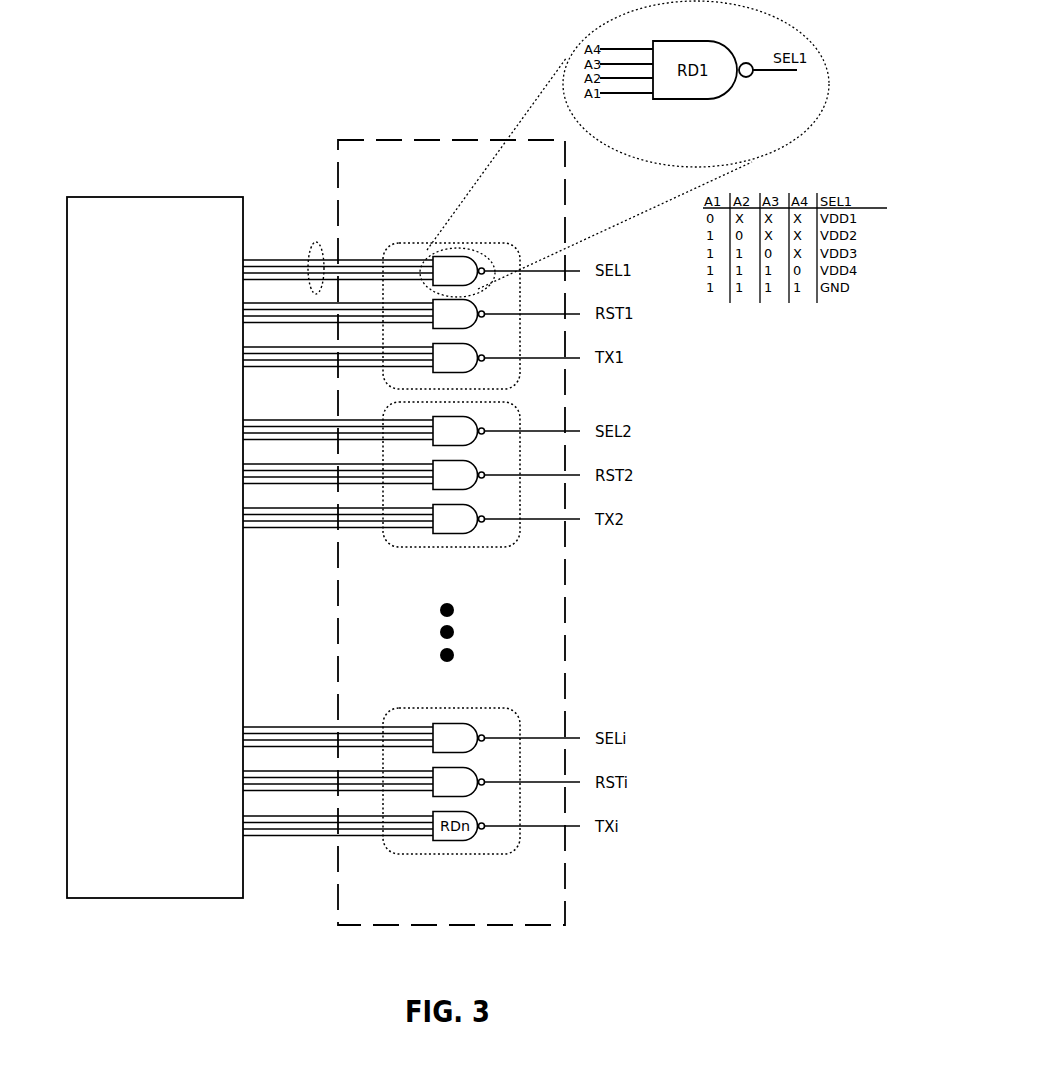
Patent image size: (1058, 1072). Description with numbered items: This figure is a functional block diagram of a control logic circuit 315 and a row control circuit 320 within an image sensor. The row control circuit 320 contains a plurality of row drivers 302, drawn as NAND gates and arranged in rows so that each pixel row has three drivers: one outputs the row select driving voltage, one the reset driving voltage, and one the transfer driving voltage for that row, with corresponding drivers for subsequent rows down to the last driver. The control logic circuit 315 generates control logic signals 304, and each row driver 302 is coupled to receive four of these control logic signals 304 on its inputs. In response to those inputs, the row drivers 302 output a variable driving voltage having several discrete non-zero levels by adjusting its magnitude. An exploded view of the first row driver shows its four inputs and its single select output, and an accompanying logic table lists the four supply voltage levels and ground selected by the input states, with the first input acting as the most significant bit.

The row drivers 302 is at (473, 249).
The control logic signals 304 is at (310, 241).
The control logic circuit 315 is at (230, 556).
The row control circuit 320 is at (486, 166).